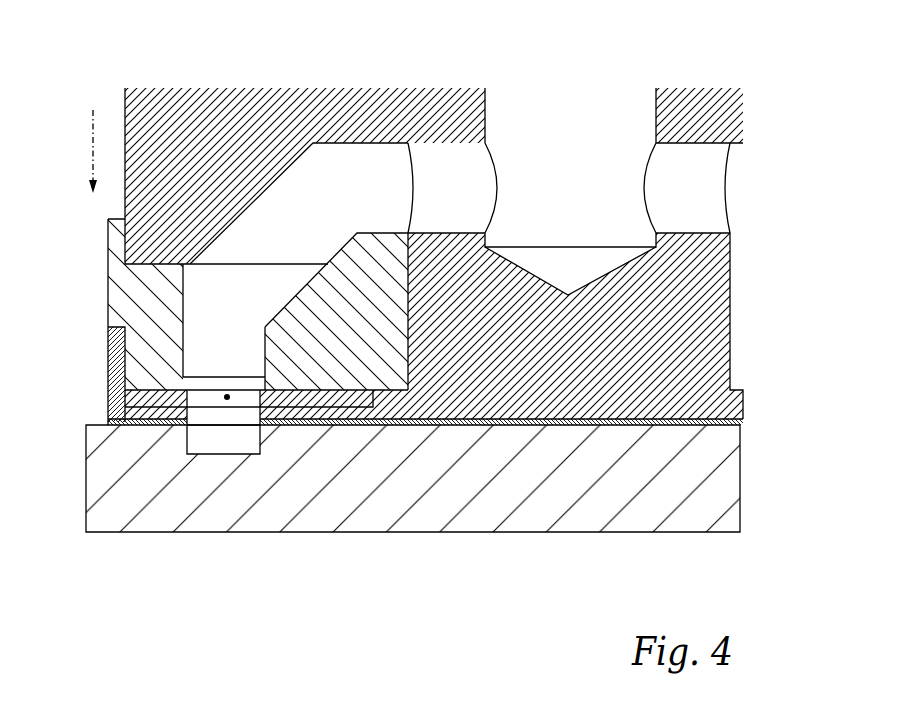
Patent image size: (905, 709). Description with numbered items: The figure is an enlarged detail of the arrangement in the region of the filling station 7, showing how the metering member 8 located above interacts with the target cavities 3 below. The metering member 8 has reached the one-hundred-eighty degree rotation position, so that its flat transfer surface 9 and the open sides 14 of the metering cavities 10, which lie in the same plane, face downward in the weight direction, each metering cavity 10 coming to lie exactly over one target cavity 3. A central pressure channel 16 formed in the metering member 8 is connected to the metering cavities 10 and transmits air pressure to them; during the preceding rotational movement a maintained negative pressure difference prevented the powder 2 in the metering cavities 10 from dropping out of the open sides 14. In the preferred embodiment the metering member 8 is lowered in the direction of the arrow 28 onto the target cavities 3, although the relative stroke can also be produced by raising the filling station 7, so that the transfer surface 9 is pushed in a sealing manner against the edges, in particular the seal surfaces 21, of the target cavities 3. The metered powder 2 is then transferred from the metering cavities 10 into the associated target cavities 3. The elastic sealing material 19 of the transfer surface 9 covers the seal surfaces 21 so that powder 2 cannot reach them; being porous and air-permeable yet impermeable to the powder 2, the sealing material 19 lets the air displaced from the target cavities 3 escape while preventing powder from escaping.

The powder 2 is at (228, 396).
The target cavity 3 is at (216, 452).
The filling station 7 is at (762, 492).
The metering member 8 is at (108, 287).
The transfer surface 9 is at (507, 436).
The metering cavity 10 is at (217, 392).
The open side 14 is at (203, 434).
The pressure channel 16 is at (283, 231).
The elastic sealing material 19 is at (166, 425).
The seal surface 21 is at (169, 404).
The arrow 28 is at (93, 157).